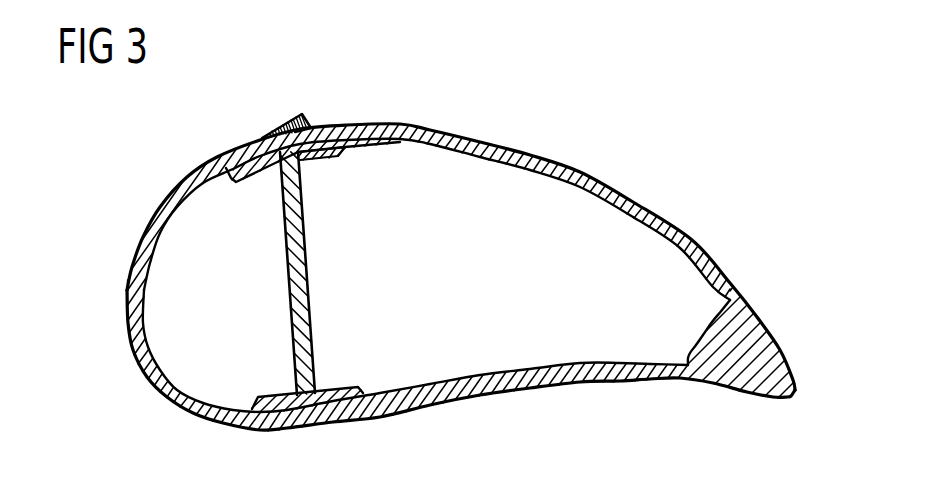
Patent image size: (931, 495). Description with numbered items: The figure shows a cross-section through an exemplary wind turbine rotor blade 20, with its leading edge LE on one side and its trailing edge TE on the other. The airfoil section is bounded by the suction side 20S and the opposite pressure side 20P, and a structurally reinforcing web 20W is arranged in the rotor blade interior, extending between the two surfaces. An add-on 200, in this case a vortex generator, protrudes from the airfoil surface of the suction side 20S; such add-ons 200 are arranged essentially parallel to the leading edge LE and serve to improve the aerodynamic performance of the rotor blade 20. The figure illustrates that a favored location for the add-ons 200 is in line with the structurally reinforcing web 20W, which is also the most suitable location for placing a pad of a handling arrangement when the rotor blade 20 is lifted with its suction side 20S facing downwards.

The rotor blade 20 is at (634, 204).
The suction side 20S is at (441, 127).
The pressure side 20P is at (461, 398).
The structurally reinforcing web 20W is at (306, 253).
The add-ons 200 is at (292, 120).
The leading edge LE is at (127, 312).
The trailing edge TE is at (795, 372).